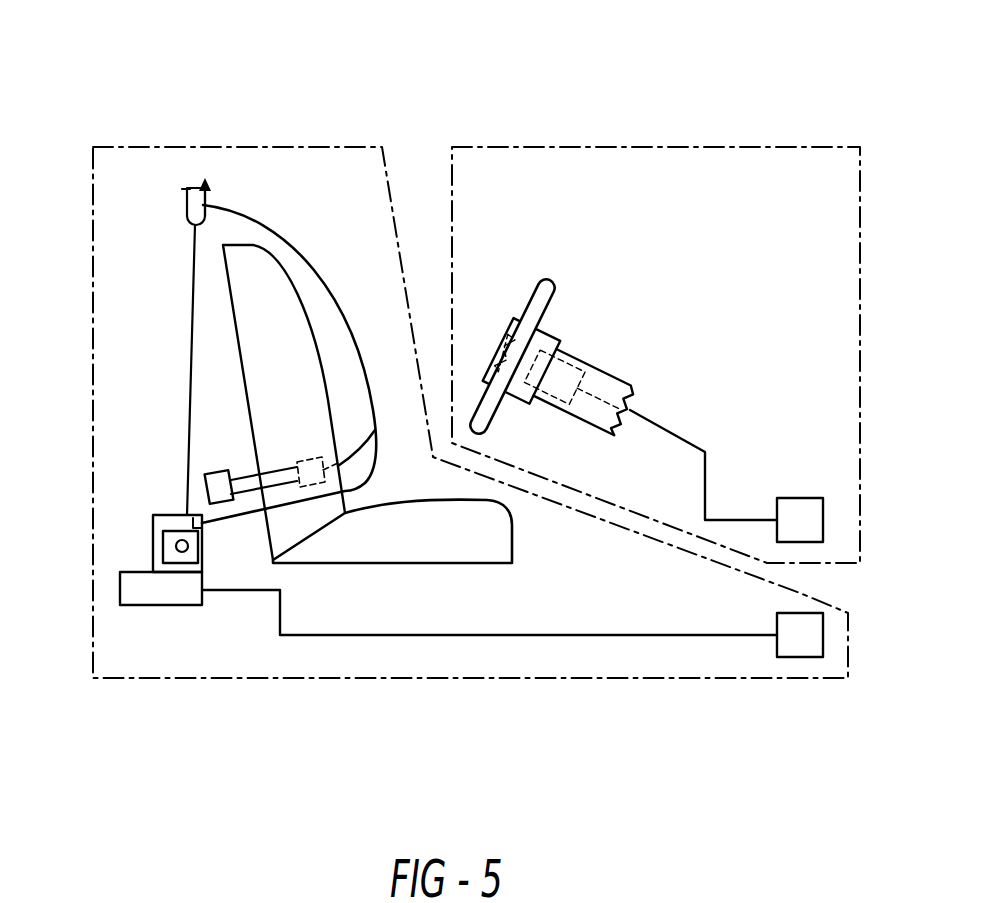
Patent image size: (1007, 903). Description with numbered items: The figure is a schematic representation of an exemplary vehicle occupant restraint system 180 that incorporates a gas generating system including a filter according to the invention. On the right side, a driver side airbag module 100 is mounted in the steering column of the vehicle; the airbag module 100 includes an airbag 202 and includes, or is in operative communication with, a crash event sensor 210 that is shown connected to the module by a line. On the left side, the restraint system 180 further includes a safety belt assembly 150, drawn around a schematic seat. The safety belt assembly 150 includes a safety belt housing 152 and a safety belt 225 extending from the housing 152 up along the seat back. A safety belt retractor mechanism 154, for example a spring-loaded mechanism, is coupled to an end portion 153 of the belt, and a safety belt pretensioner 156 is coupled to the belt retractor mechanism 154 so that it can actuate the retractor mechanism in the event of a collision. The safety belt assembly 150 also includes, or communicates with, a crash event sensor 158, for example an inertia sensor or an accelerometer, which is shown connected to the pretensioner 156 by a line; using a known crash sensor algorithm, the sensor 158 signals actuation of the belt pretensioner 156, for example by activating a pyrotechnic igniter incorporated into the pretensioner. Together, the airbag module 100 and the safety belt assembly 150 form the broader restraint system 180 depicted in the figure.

The driver side airbag module 100 is at (657, 147).
The safety belt assembly 150 is at (285, 146).
The safety belt housing 152 is at (163, 545).
The end portion 153 is at (193, 493).
The safety belt retractor mechanism 154 is at (152, 515).
The safety belt pretensioner 156 is at (167, 607).
The crash event sensor 158 is at (800, 657).
The vehicle occupant restraint system 180 is at (610, 42).
The airbag 202 is at (507, 322).
The crash event sensor 210 is at (800, 498).
The safety belt 225 is at (250, 218).